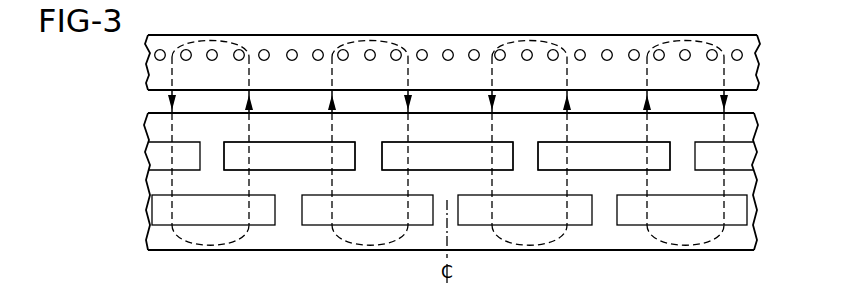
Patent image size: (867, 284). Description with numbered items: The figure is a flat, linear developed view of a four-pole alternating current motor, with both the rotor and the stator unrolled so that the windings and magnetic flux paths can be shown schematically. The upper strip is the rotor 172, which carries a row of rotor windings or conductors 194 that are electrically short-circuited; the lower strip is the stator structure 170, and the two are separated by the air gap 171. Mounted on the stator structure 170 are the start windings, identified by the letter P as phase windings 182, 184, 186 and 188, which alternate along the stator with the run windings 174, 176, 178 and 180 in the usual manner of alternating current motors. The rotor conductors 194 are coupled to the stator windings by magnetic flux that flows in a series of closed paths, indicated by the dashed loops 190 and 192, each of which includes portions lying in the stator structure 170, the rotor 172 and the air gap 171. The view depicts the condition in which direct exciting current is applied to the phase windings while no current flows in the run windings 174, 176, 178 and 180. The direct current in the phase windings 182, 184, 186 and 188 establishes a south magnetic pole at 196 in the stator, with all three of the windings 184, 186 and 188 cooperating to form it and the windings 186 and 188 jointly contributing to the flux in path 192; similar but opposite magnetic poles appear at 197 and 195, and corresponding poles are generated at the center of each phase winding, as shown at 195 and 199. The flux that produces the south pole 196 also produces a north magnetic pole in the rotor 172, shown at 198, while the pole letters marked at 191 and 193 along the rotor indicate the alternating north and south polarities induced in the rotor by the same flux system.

The stator structure 170 is at (664, 261).
The air gap 171 is at (752, 98).
The rotor 172 is at (645, 34).
The run winding 174 is at (740, 216).
The run winding 176 is at (577, 217).
The run winding 178 is at (350, 217).
The run winding 180 is at (156, 210).
The phase winding 182 is at (148, 151).
The phase winding 184 is at (620, 163).
The phase winding 186 is at (458, 166).
The phase winding 188 is at (291, 177).
The closed flux path 190 is at (193, 40).
The north pole region 191 is at (148, 79).
The closed flux path 192 is at (392, 38).
The south pole region 193 is at (596, 67).
The rotor windings 194 is at (293, 50).
The magnetic pole 195 is at (303, 124).
The magnetic pole 196 is at (460, 124).
The magnetic pole 197 is at (594, 124).
The north magnetic pole 198 is at (438, 67).
The magnetic pole 199 is at (280, 78).